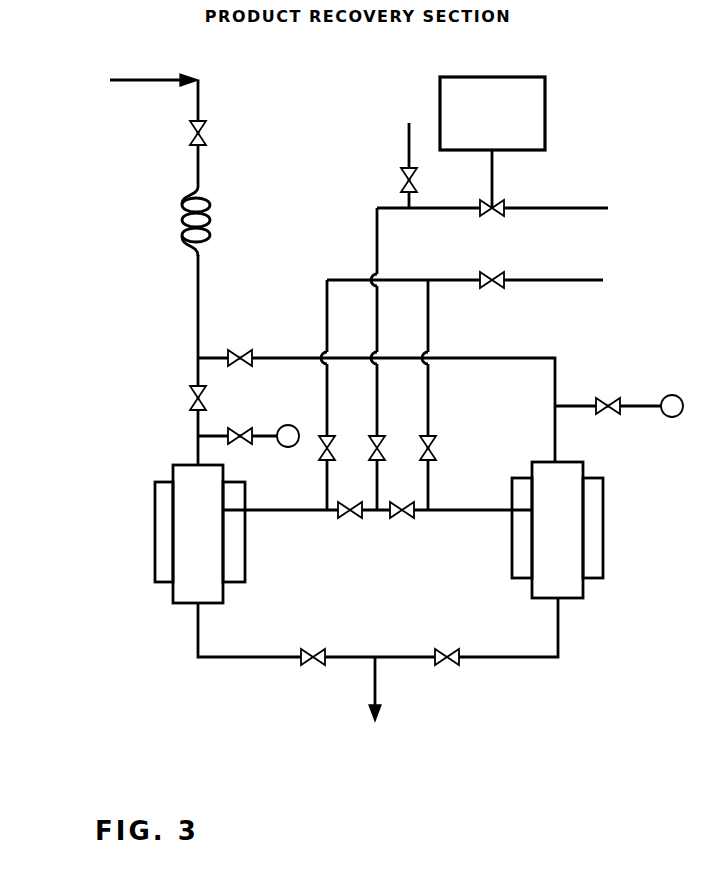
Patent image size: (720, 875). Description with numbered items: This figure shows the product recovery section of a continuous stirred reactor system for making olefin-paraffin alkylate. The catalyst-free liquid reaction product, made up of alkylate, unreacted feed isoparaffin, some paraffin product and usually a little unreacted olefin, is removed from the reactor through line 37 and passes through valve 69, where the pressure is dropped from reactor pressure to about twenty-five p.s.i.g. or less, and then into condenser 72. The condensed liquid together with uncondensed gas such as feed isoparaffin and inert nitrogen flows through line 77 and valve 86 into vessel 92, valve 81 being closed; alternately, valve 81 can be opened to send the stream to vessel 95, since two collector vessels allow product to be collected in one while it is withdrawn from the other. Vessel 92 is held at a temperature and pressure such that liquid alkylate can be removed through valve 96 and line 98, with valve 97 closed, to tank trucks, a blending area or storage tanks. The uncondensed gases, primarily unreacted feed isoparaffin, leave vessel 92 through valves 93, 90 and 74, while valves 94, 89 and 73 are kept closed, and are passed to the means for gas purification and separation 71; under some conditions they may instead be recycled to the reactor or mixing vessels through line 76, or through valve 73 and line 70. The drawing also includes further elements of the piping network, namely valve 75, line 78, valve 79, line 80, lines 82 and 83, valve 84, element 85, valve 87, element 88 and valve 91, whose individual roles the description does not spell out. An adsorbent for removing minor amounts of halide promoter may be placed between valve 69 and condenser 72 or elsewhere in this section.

The line 37 is at (147, 77).
The valve 69 is at (205, 138).
The line 70 is at (407, 137).
The means for gas purification and separation 71 is at (546, 113).
The condenser 72 is at (213, 214).
The valve 73 is at (401, 183).
The valve 74 is at (495, 181).
The valve 75 is at (485, 215).
The line 76 is at (556, 207).
The line 77 is at (204, 298).
The line 78 is at (376, 243).
The valve 79 is at (486, 288).
The line 80 is at (553, 280).
The valve 81 is at (228, 352).
The line 82 is at (326, 309).
The line 83 is at (448, 357).
The valve 84 is at (606, 398).
The pressure gauge 85 is at (677, 397).
The valve 86 is at (190, 405).
The valve 87 is at (230, 428).
The pressure gauge 88 is at (292, 425).
The valve 89 is at (335, 452).
The valve 90 is at (383, 452).
The valve 91 is at (436, 452).
The vessel 92 is at (172, 470).
The valve 93 is at (352, 517).
The valve 94 is at (403, 517).
The vessel 95 is at (587, 470).
The valve 96 is at (305, 655).
The valve 97 is at (440, 655).
The line 98 is at (378, 677).